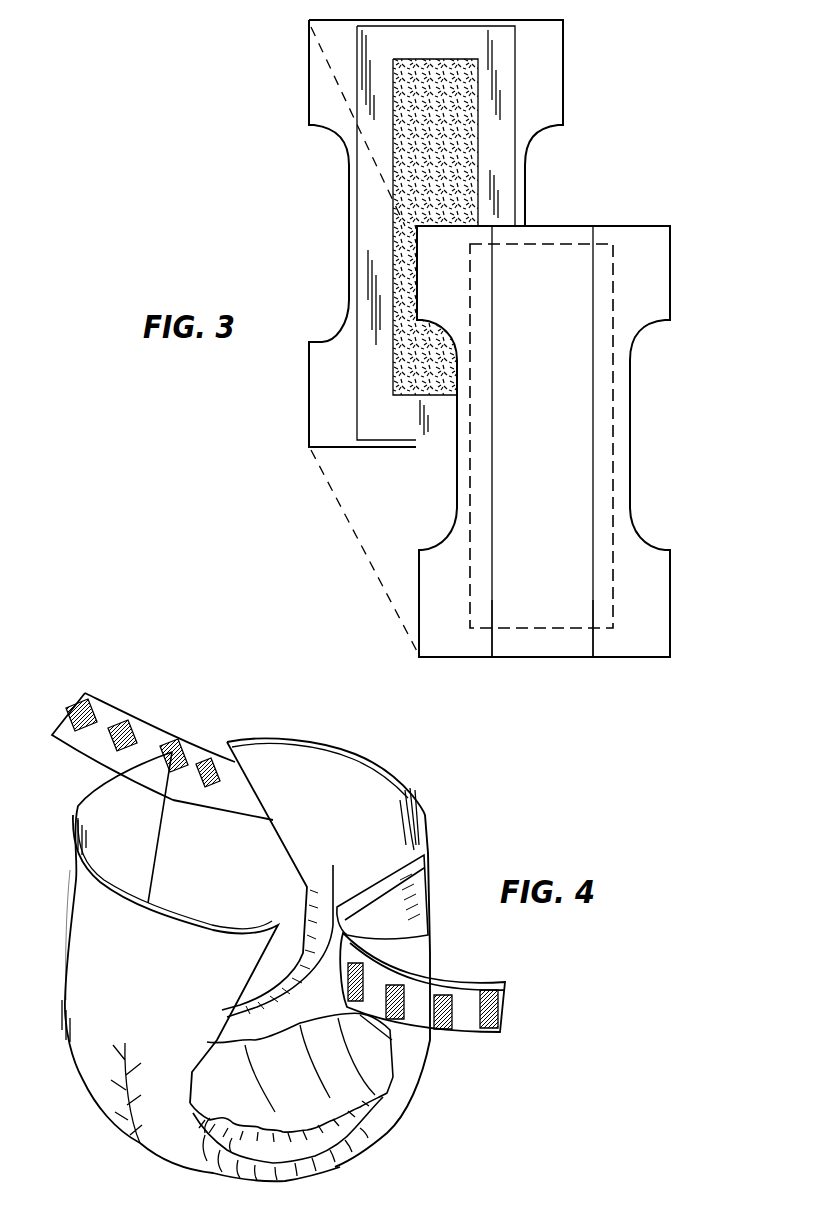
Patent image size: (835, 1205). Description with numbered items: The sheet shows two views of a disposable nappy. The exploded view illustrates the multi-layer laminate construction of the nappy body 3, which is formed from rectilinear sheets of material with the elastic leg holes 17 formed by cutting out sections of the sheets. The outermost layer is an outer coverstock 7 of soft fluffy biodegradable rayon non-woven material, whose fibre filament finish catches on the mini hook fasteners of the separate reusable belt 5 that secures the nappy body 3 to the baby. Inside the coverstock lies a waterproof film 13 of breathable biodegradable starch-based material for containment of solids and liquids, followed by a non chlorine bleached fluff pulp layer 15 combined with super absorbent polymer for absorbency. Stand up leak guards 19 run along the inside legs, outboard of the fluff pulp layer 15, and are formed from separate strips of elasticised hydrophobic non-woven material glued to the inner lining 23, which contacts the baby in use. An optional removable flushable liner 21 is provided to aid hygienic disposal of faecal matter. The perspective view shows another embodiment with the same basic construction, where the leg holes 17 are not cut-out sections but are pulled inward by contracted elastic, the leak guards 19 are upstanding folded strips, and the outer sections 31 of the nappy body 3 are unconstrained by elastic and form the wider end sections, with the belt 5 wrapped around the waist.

In FIG. 4, the nappy body 3 is at (387, 817).
In FIG. 4, the reusable belt 5 is at (95, 728).
In FIG. 3, the outer coverstock 7 is at (549, 48).
In FIG. 3, the waterproof film 13 is at (497, 118).
In FIG. 3, the fluff pulp layer 15 is at (455, 150).
In FIG. 3, the leg holes 17 is at (330, 205).
In FIG. 4, the leg holes 17 is at (193, 838).
In FIG. 3, the leak guards 19 is at (477, 473).
In FIG. 4, the leak guards 19 is at (313, 950).
In FIG. 3, the flushable liner 21 is at (620, 570).
In FIG. 3, the inner lining 23 is at (548, 600).
In FIG. 4, the inner lining 23 is at (397, 1100).
In FIG. 4, the outer sections 31 is at (322, 788).